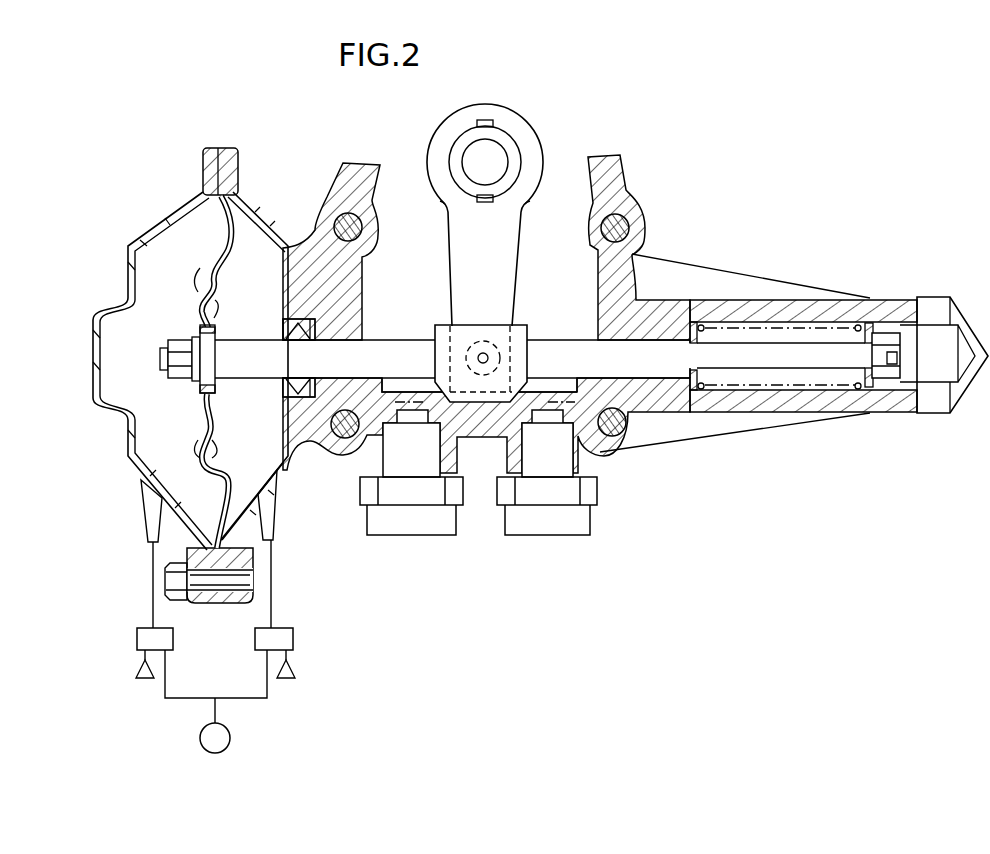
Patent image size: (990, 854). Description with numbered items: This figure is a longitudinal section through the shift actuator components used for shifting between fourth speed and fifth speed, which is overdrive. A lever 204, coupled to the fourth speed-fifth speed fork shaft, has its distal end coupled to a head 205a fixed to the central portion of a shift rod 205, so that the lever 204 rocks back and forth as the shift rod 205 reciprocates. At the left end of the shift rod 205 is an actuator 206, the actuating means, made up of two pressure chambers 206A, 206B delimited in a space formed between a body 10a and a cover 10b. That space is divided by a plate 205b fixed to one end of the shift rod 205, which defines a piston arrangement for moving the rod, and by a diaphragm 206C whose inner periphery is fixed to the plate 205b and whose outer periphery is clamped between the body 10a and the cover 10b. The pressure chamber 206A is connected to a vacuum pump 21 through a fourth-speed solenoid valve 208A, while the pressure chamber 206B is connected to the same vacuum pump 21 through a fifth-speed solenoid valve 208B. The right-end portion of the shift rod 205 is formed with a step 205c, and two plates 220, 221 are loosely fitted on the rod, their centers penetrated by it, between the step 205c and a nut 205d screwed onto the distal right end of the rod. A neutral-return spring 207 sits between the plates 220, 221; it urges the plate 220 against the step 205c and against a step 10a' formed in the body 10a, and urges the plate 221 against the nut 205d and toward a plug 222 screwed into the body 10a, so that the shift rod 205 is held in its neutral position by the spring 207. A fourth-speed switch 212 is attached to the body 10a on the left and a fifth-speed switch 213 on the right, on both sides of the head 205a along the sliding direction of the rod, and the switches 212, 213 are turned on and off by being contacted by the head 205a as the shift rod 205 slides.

The body 10a is at (324, 251).
The cover 10b is at (148, 228).
The step 10a' is at (735, 364).
The lever 204 is at (512, 250).
The shift rod 205 is at (572, 350).
The head 205a is at (441, 330).
The plate 205b is at (193, 320).
The step 205c is at (690, 333).
The nut 205d is at (887, 336).
The actuator 206 is at (160, 189).
The pressure chamber 206A is at (155, 468).
The pressure chamber 206B is at (275, 463).
The diaphragm 206C is at (227, 227).
The neutral-return spring 207 is at (773, 392).
The fourth-speed solenoid valve 208A is at (137, 640).
The fifth-speed solenoid valve 208B is at (295, 640).
The vacuum pump 21 is at (228, 742).
The fourth-speed switch 212 is at (415, 524).
The fifth-speed switch 213 is at (549, 524).
The plate 220 is at (697, 320).
The plate 221 is at (870, 388).
The plug 222 is at (942, 398).